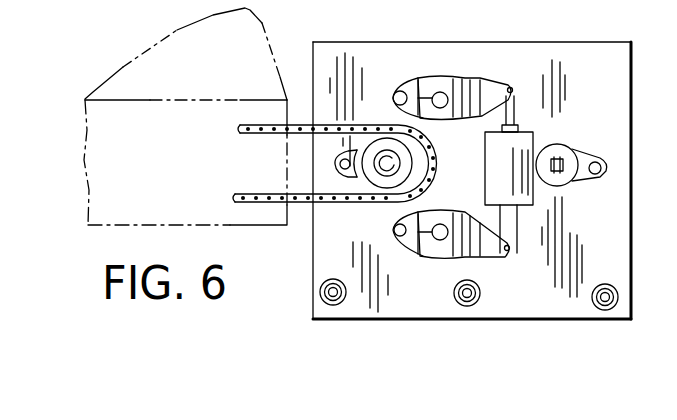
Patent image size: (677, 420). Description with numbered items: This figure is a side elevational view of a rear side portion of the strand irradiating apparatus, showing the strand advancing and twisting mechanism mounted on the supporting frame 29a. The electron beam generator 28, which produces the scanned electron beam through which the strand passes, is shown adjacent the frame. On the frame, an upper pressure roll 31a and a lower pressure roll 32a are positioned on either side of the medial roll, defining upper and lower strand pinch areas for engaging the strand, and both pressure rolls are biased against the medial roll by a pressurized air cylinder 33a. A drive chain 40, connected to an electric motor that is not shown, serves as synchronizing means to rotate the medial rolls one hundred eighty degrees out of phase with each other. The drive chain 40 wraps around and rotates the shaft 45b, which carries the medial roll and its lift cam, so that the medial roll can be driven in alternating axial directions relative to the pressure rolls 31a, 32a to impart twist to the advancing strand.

The electron beam generator 28 is at (277, 57).
The supporting frame 29a is at (542, 43).
The upper pressure roll 31a is at (438, 77).
The lower pressure roll 32a is at (430, 253).
The pressurized air cylinder 33a is at (530, 143).
The drive chain 40 is at (332, 123).
The shaft 45b is at (390, 166).